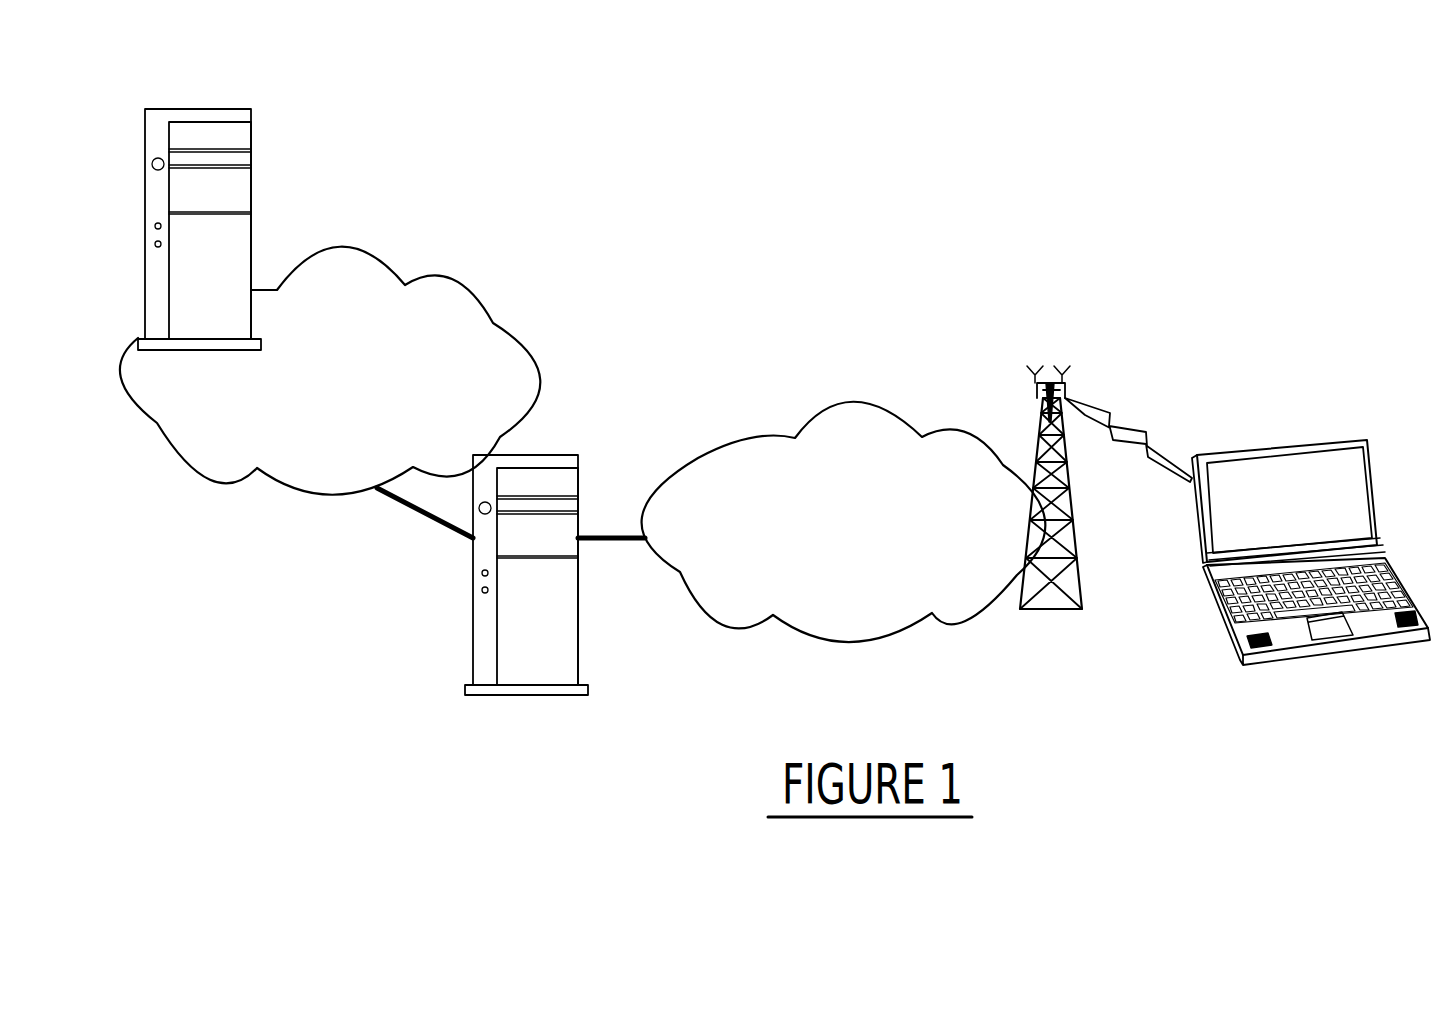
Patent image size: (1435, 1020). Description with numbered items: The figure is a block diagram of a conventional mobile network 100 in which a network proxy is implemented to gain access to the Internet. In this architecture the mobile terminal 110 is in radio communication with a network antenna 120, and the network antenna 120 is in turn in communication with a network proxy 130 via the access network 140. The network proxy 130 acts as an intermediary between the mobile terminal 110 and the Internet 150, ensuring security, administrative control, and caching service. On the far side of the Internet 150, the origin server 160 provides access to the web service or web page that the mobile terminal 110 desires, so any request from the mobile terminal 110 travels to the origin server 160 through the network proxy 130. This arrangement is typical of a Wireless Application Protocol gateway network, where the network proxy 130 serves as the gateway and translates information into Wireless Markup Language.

The network 100 is at (965, 202).
The mobile terminal 110 is at (1378, 495).
The network antenna 120 is at (1066, 388).
The network proxy 130 is at (552, 460).
The access network 140 is at (865, 418).
The Internet 150 is at (443, 306).
The origin server 160 is at (208, 115).